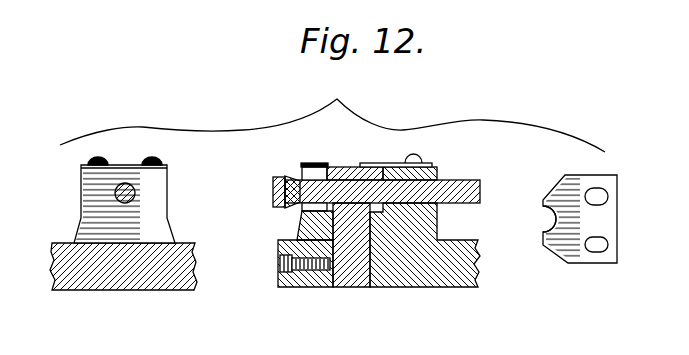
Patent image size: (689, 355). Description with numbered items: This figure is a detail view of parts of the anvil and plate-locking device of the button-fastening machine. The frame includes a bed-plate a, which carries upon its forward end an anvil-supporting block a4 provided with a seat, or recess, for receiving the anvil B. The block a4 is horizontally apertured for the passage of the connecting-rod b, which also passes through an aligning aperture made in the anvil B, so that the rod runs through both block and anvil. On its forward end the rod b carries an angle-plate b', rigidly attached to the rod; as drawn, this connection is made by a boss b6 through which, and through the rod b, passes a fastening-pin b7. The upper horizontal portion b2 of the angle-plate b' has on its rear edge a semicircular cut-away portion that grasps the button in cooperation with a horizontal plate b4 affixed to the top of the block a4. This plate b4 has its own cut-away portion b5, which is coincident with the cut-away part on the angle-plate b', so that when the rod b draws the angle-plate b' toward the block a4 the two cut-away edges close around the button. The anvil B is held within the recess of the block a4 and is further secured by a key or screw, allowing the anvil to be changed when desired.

The bed-plate a is at (265, 255).
The anvil-supporting block a4 is at (163, 193).
The connecting-rod b is at (310, 185).
The angle-plate b' is at (312, 173).
The upper horizontal portion of the angle-plate b2 is at (318, 164).
The anvil B is at (359, 284).
The horizontal plate b4 is at (126, 165).
The cut-away portion b5 is at (545, 218).
The boss b6 is at (273, 182).
The fastening-pin b7 is at (288, 179).